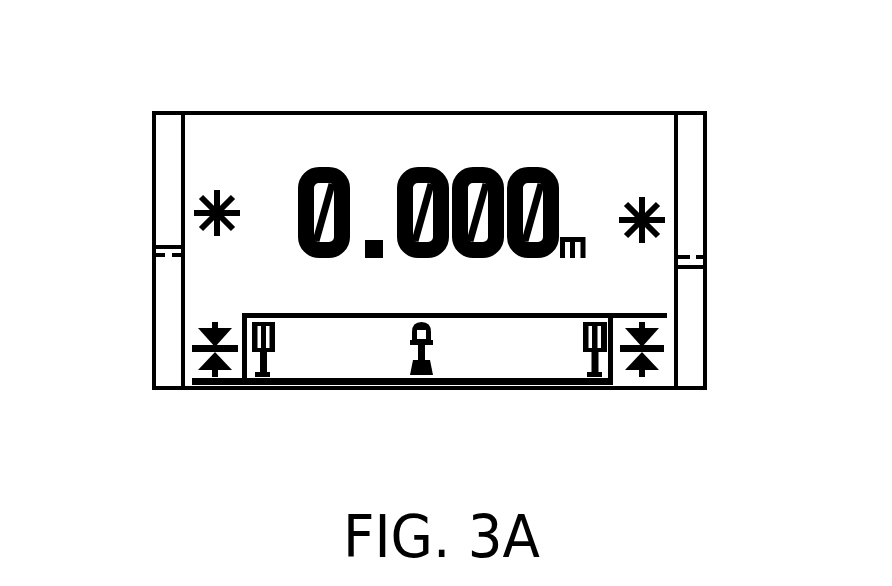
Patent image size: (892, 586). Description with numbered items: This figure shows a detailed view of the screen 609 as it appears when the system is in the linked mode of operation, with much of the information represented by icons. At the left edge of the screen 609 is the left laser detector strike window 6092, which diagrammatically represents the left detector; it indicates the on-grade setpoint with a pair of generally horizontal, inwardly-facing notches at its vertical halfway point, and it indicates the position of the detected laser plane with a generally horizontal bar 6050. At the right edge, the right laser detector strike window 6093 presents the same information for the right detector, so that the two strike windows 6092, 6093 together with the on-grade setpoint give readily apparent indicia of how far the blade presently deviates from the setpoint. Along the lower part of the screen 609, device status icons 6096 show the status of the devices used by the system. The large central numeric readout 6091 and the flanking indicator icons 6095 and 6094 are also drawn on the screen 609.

The screen 609 is at (367, 53).
The distance value display 6091 is at (537, 168).
The left laser detector strike window 6092 is at (168, 132).
The right laser detector strike window 6093 is at (690, 138).
The horizontal bar 6050 is at (152, 248).
The asterisk indicator icons 6095 is at (198, 204).
The hourglass indicator icons 6094 is at (198, 340).
The device status icons 6096 is at (410, 334).